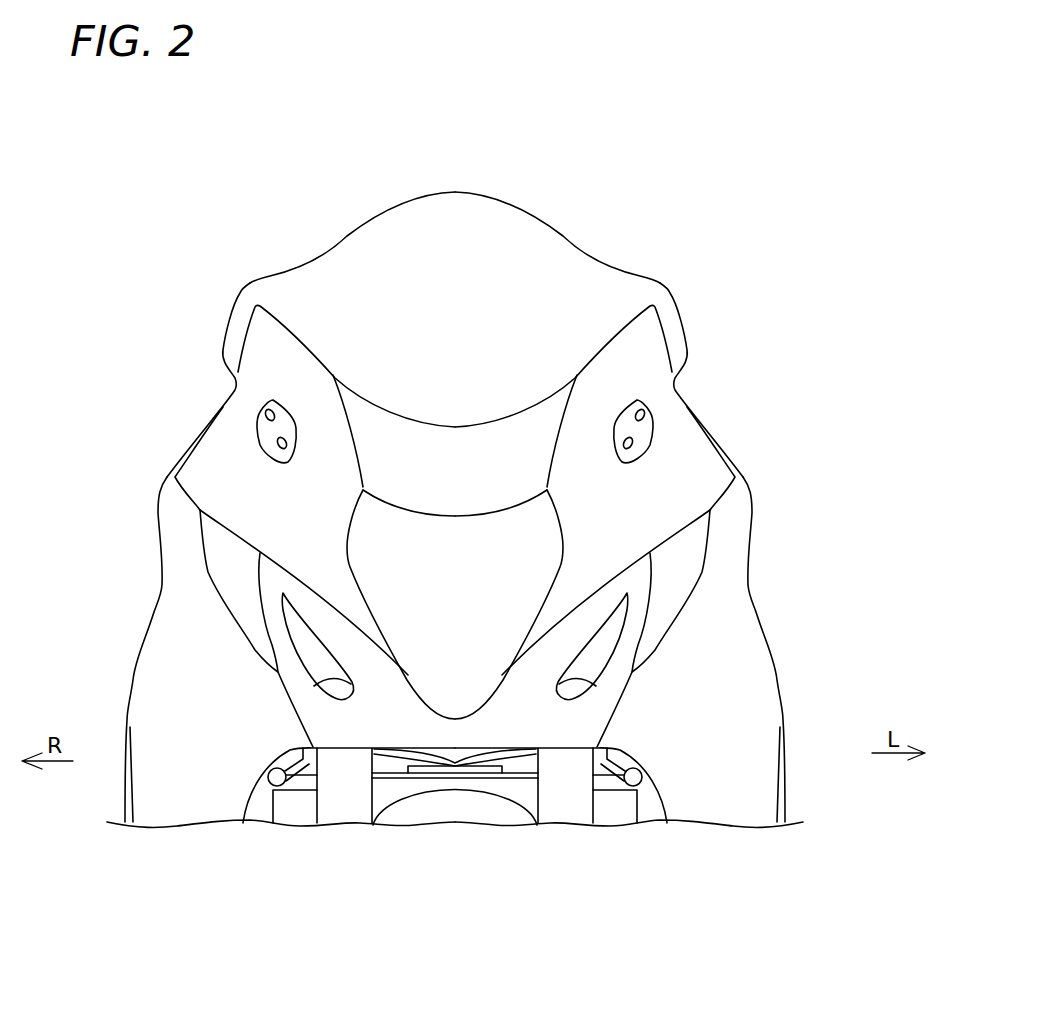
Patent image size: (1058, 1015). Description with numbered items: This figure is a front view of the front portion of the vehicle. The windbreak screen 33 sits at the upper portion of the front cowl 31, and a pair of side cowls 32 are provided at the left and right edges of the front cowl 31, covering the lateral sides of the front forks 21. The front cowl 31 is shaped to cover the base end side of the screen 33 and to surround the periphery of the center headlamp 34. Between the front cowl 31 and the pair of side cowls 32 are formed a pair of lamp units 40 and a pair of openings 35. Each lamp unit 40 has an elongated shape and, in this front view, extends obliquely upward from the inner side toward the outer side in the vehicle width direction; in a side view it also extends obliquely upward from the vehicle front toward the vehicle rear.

The front fork 21 is at (363, 807).
The front cowl 31 is at (197, 409).
The side cowl 32 is at (153, 648).
The windbreak screen 33 is at (498, 213).
The center headlamp 34 is at (547, 557).
The opening 35 is at (585, 682).
The lamp unit 40 is at (220, 548).